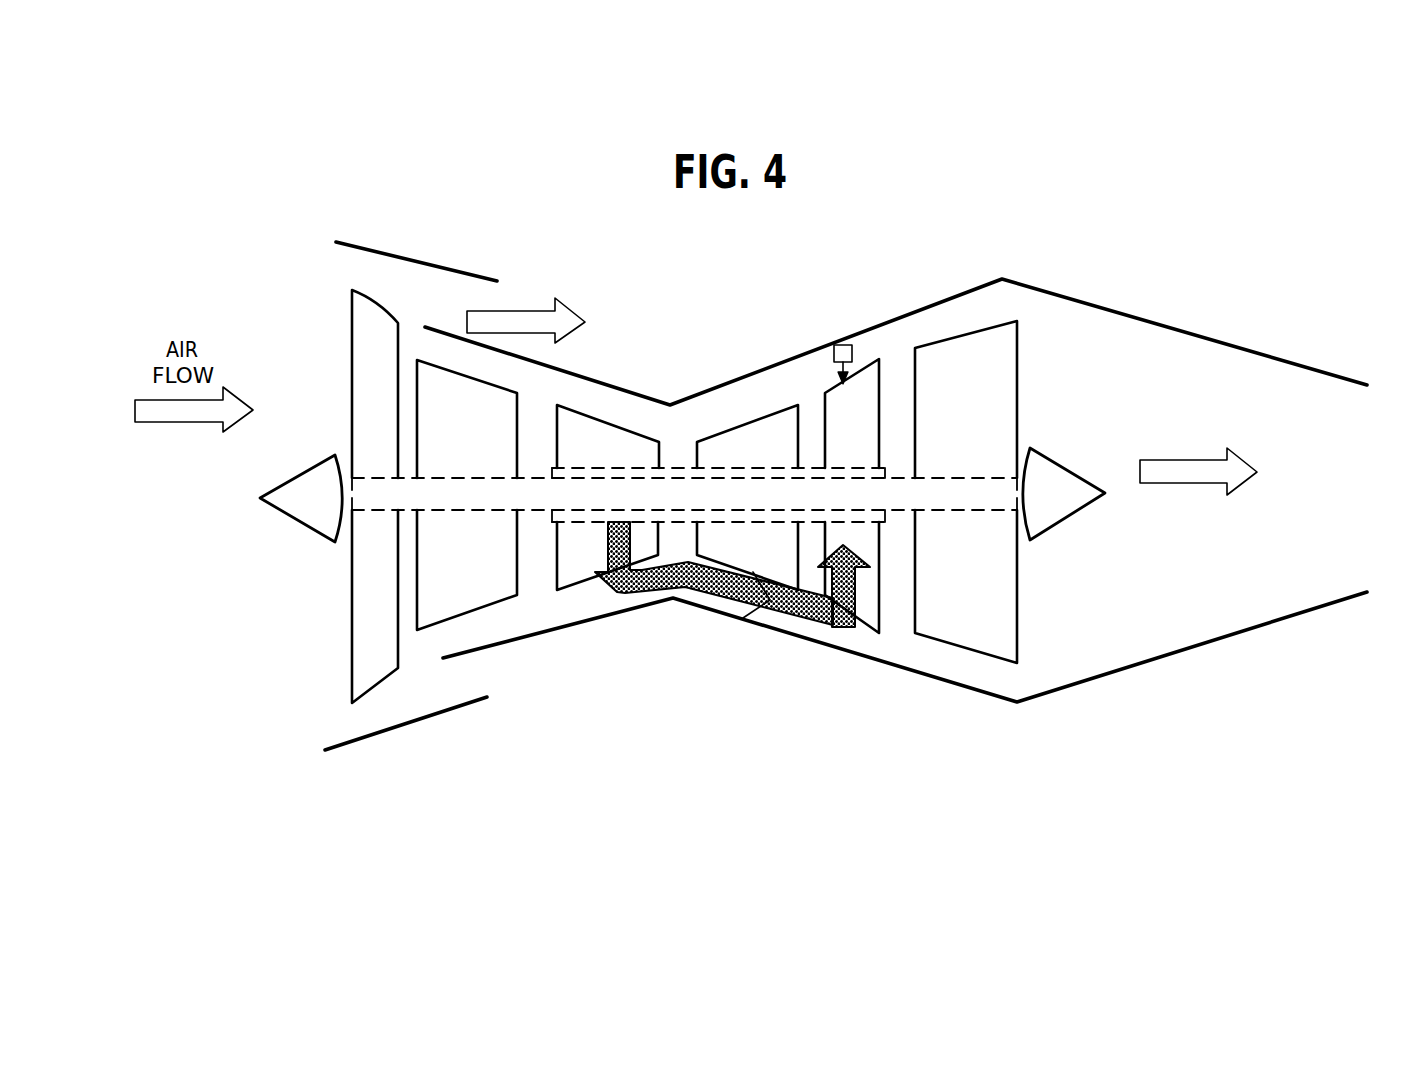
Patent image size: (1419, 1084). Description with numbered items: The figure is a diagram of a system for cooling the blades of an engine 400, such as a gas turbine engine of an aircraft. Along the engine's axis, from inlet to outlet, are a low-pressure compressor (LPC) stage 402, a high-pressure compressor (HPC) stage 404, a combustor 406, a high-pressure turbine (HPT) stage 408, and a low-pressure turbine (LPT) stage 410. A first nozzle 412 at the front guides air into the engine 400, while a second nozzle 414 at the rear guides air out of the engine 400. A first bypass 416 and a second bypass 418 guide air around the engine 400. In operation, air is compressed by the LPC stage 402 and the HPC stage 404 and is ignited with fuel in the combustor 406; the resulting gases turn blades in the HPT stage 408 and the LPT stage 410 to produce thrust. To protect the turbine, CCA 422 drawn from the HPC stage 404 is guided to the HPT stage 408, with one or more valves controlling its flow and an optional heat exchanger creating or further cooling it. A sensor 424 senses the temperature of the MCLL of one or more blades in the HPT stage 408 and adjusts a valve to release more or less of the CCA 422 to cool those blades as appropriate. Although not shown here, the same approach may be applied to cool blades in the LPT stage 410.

The engine 400 is at (218, 745).
The low-pressure compressor (LPC) stage 402 is at (452, 597).
The high-pressure compressor (HPC) stage 404 is at (568, 567).
The combustor 406 is at (727, 538).
The high-pressure turbine (HPT) stage 408 is at (867, 605).
The low-pressure turbine (LPT) stage 410 is at (955, 617).
The first nozzle 412 is at (302, 505).
The second nozzle 414 is at (1068, 480).
The first bypass 416 is at (680, 493).
The second bypass 418 is at (358, 723).
The CCA 422 is at (730, 602).
The sensor 424 is at (842, 345).